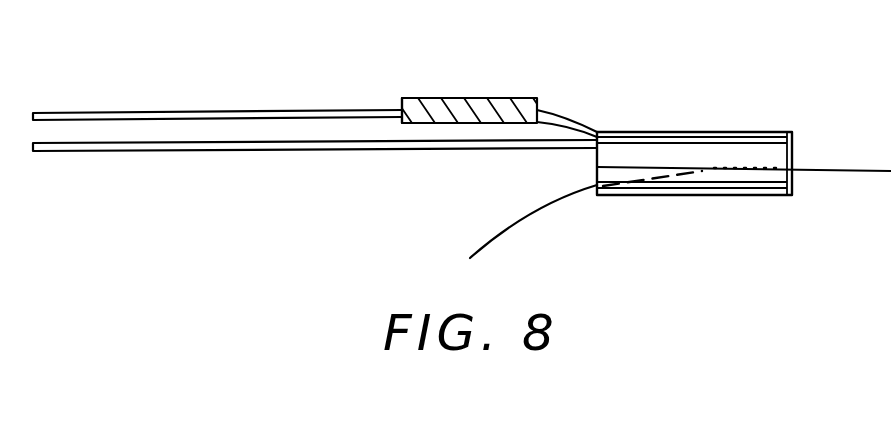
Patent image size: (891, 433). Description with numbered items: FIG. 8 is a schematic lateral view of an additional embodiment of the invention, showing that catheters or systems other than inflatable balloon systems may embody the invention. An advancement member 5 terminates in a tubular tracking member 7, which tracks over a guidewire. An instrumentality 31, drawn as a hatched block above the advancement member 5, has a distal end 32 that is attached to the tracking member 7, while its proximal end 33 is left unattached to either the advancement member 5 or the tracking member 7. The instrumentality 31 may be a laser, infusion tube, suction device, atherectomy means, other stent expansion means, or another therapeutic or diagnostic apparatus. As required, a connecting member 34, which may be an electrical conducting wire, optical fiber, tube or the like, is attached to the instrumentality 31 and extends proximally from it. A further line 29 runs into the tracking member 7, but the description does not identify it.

The connecting member 34 is at (303, 112).
The advancement member 5 is at (284, 154).
The instrumentality 31 is at (540, 97).
The proximal end 33 is at (404, 110).
The distal end 32 is at (540, 110).
The tubular tracking member 7 is at (750, 182).
The lead wire 29 is at (520, 223).